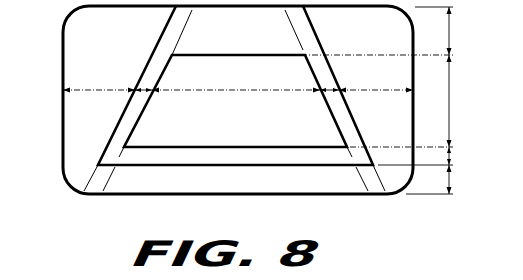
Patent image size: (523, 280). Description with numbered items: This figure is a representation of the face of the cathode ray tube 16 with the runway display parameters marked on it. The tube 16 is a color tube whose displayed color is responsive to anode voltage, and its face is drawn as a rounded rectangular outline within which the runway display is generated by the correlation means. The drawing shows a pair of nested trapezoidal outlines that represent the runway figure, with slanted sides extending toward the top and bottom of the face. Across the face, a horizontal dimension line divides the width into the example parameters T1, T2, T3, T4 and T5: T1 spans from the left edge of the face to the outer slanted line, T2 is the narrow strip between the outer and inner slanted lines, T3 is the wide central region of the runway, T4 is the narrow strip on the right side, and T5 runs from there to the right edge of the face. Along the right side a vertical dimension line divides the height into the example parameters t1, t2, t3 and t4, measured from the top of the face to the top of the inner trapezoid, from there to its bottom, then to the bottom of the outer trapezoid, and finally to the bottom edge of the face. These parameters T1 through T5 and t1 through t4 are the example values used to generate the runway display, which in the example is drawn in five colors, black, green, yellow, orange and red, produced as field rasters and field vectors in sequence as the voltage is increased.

The cathode ray tube 16 is at (63, 118).
The runway display parameter T1 is at (99, 81).
The runway display parameter T2 is at (147, 80).
The runway display parameter T3 is at (236, 81).
The runway display parameter T4 is at (326, 81).
The runway display parameter T5 is at (376, 81).
The runway display parameter t1 is at (457, 31).
The runway display parameter t2 is at (457, 101).
The runway display parameter t3 is at (457, 158).
The runway display parameter t4 is at (457, 179).